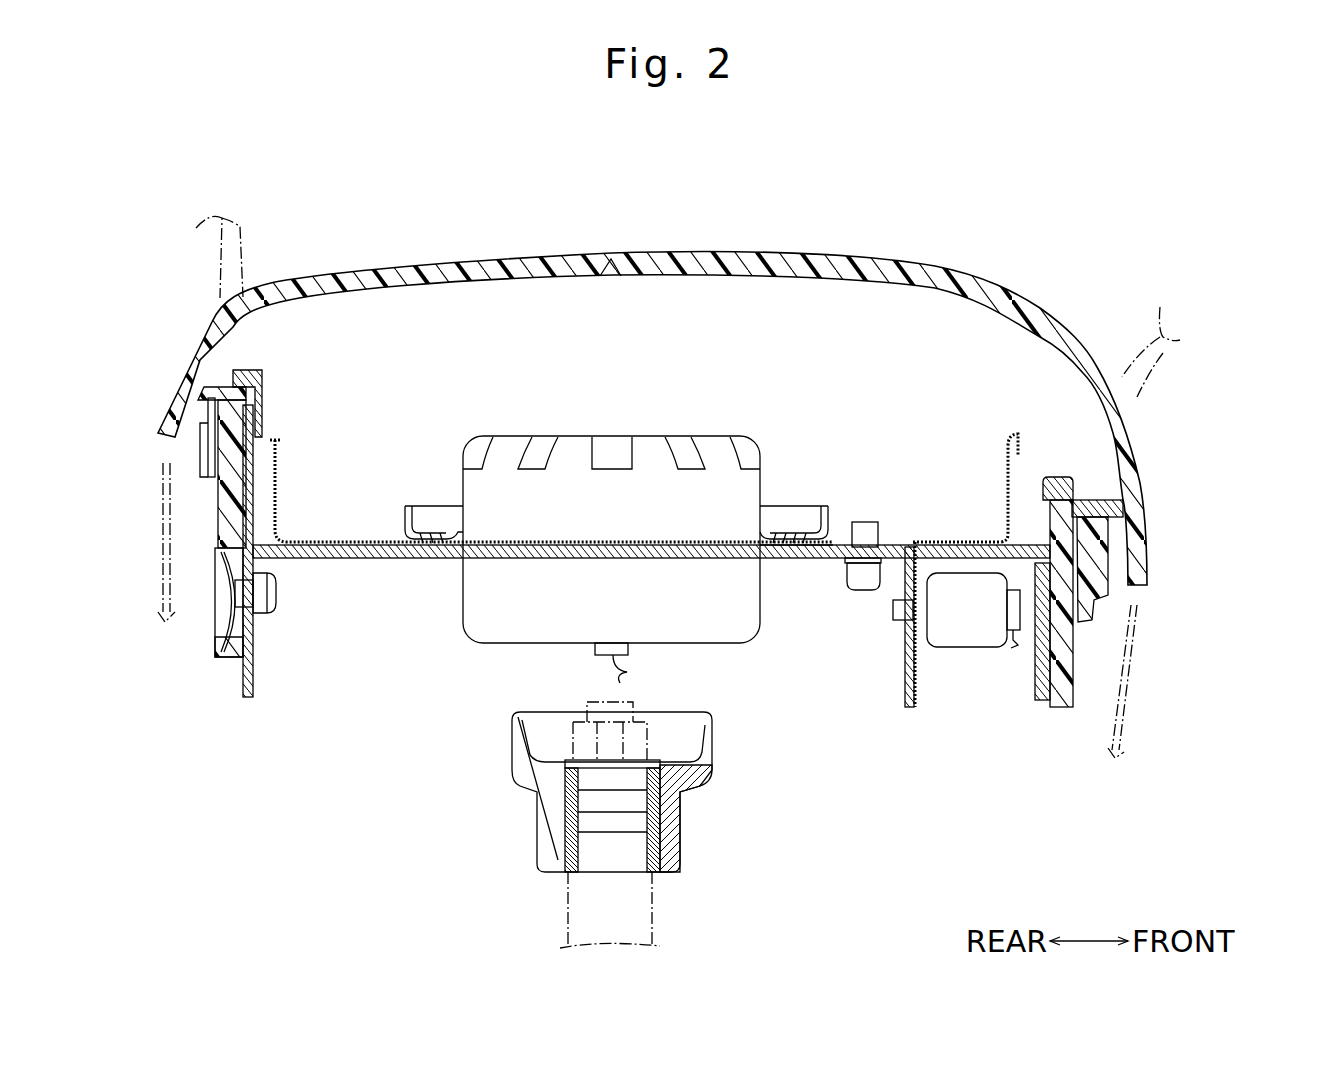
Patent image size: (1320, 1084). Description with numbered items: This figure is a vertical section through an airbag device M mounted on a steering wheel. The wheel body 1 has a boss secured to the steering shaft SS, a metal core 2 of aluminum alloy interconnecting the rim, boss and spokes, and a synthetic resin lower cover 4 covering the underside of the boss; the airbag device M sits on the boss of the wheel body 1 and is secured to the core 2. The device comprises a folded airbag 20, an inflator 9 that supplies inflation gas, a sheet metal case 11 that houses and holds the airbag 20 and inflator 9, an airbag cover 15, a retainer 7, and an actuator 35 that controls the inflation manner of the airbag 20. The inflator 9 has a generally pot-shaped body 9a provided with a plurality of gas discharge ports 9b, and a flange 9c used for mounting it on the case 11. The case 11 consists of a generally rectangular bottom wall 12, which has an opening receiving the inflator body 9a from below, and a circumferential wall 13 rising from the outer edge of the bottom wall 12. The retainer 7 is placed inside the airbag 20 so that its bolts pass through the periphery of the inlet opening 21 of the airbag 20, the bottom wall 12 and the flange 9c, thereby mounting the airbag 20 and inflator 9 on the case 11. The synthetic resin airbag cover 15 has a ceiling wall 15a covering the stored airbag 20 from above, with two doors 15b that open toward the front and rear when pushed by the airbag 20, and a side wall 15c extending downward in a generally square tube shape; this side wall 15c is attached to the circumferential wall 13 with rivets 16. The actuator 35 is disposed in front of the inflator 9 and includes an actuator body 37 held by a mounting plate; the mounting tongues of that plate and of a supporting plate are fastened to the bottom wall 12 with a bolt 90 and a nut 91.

The airbag device M is at (990, 245).
The wheel body 1 is at (200, 672).
The core 2 is at (530, 770).
The lower cover 4 is at (1123, 710).
The retainer 7 is at (435, 500).
The inflator 9 is at (485, 650).
The body 9a is at (725, 645).
The gas discharge ports 9b is at (682, 445).
The flange 9c is at (770, 560).
The case 11 is at (265, 688).
The bottom wall 12 is at (322, 563).
The circumferential wall 13 is at (247, 632).
The airbag cover 15 is at (1160, 503).
The ceiling wall 15a is at (1137, 440).
The doors 15b is at (291, 287).
The side wall 15c is at (222, 510).
The rivets 16 is at (228, 603).
The airbag 20 is at (290, 460).
The inlet opening 21 is at (755, 545).
The actuator 35 is at (948, 700).
The actuator body 37 is at (980, 653).
The bolt 90 is at (865, 585).
The nut 91 is at (875, 525).
The steering shaft SS is at (580, 908).